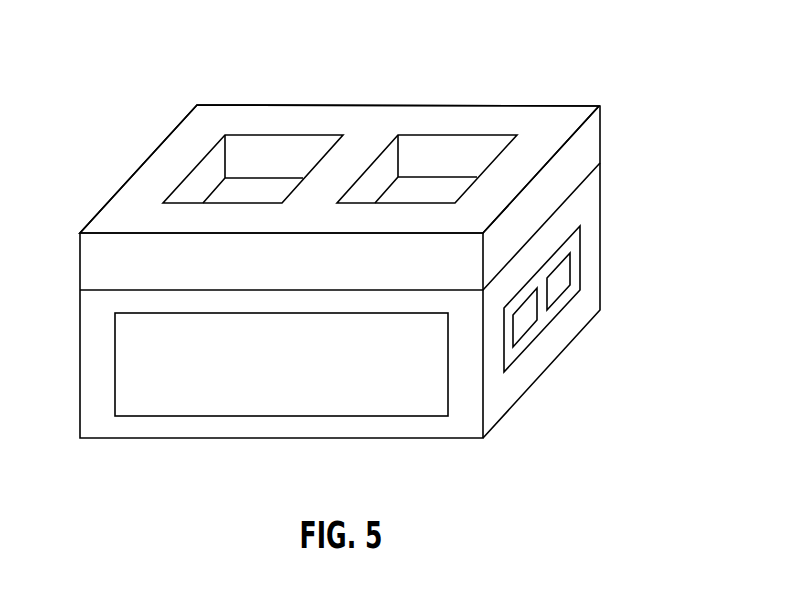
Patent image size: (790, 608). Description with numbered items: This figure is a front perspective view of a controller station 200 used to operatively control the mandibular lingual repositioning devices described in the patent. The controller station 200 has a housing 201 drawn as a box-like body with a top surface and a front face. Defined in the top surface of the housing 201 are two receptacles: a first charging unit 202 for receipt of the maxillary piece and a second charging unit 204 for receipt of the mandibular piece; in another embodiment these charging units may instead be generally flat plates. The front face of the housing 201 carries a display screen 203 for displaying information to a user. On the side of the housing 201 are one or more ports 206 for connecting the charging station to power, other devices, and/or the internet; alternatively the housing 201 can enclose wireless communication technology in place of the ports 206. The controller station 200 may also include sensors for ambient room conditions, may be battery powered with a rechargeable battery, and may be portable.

The controller station 200 is at (604, 44).
The housing 201 is at (140, 168).
The first charging unit 202 is at (283, 163).
The display screen 203 is at (167, 388).
The second charging unit 204 is at (447, 163).
The ports 206 is at (553, 288).